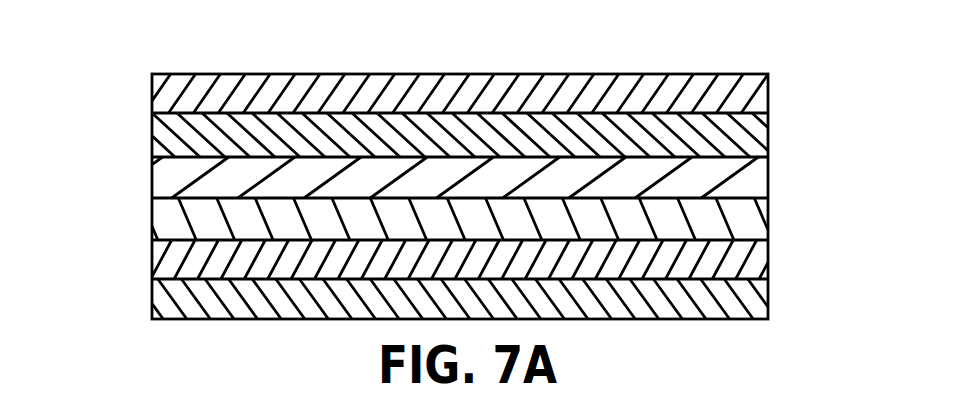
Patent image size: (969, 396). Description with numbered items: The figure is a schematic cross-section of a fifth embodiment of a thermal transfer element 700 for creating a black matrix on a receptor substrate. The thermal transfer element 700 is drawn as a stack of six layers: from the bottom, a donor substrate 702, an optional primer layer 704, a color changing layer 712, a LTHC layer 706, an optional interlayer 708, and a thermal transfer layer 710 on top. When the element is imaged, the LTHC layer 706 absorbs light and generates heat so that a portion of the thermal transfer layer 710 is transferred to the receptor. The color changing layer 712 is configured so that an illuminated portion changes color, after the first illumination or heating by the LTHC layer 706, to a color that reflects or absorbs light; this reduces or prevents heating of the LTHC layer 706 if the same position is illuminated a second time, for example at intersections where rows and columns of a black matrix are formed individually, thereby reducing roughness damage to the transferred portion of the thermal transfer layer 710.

The thermal transfer element 700 is at (118, 87).
The donor substrate 702 is at (755, 303).
The primer layer 704 is at (758, 262).
The LTHC layer 706 is at (750, 185).
The interlayer 708 is at (757, 134).
The thermal transfer layer 710 is at (760, 92).
The color changing layer 712 is at (753, 223).